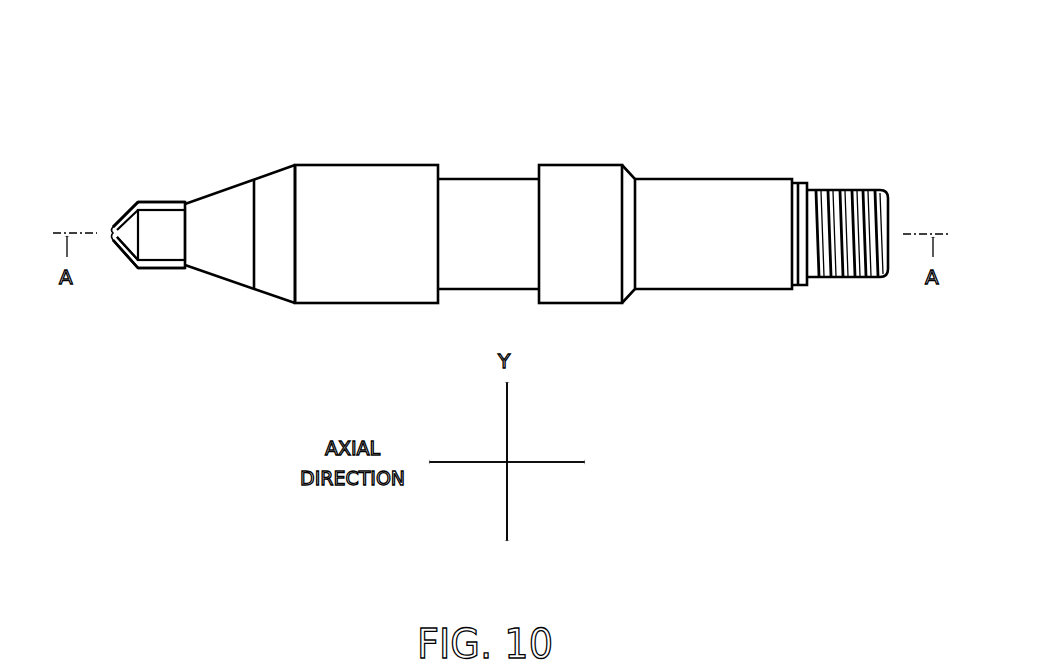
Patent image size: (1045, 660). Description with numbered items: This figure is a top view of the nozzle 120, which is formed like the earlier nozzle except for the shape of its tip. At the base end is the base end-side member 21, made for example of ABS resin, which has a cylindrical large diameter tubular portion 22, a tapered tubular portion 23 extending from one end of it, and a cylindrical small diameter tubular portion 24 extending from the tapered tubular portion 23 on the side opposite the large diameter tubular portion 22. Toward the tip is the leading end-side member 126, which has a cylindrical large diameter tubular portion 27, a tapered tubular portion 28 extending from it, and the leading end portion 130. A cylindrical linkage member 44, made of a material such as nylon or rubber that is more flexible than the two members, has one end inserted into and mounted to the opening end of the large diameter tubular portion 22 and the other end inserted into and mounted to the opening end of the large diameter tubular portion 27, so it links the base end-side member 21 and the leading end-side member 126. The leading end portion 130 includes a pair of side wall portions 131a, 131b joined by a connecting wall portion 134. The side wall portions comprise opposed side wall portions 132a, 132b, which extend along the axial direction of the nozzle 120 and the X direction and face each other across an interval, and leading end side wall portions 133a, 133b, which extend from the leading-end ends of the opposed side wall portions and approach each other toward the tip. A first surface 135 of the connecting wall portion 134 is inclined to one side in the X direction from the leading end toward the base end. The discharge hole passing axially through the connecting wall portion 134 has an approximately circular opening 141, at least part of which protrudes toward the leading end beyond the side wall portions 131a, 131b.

The nozzle 120 is at (599, 91).
The base end-side member 21 is at (699, 147).
The large diameter tubular portion 22 is at (590, 173).
The tapered tubular portion 23 is at (630, 288).
The small diameter tubular portion 24 is at (763, 187).
The large diameter tubular portion 27 is at (377, 178).
The tapered tubular portion 28 is at (265, 280).
The linkage member 44 is at (478, 188).
The leading end-side member 126 is at (288, 146).
The leading end portion 130 is at (116, 207).
The side wall portion 131a is at (157, 274).
The side wall portion 131b is at (154, 192).
The opposed side wall portion 132a is at (167, 262).
The opposed side wall portion 132b is at (170, 207).
The leading end side wall portion 133a is at (131, 265).
The leading end side wall portion 133b is at (130, 205).
The connecting wall portion 134 is at (175, 225).
The first surface 135 is at (167, 248).
The opening 141 is at (112, 241).